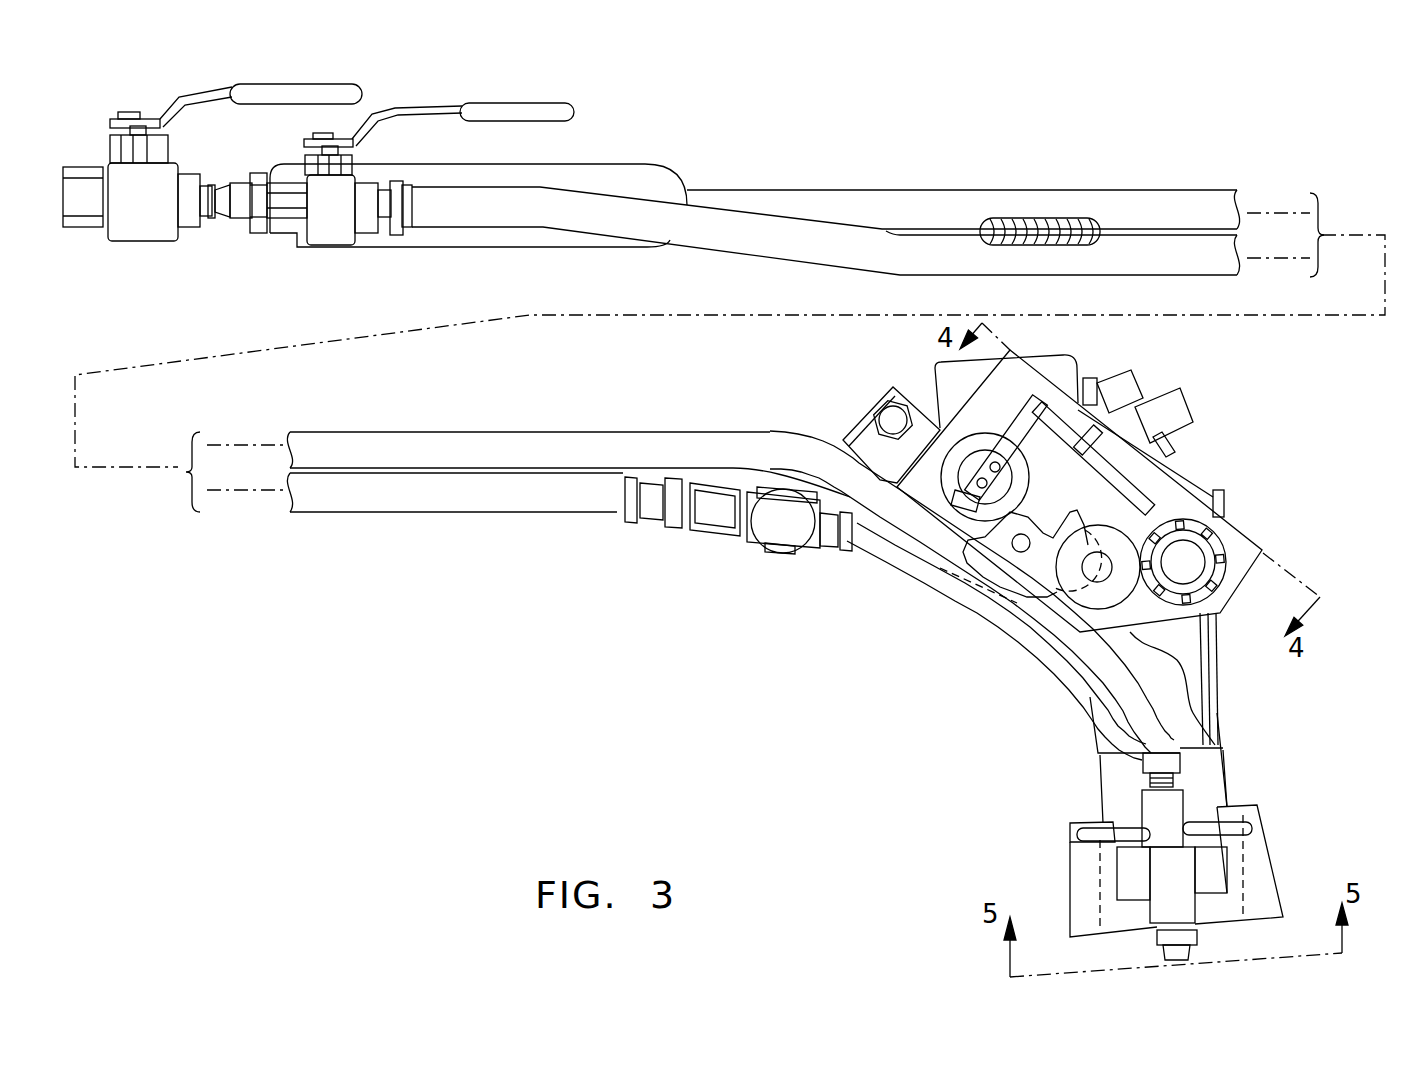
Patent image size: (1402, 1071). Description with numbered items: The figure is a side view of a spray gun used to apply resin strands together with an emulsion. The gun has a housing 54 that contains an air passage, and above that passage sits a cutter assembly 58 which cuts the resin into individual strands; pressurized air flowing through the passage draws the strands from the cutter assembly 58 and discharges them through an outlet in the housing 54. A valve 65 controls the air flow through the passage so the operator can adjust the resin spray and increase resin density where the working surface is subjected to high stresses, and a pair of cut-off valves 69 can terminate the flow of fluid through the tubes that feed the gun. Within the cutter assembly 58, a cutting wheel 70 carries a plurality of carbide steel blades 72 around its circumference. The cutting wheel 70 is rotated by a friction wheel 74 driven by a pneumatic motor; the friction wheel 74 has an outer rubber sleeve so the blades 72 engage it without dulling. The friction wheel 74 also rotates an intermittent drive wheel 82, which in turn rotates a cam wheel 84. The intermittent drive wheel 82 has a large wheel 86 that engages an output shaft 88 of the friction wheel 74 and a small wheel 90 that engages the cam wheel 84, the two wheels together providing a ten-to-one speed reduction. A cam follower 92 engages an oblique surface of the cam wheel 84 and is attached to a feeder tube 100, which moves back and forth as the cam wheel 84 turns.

The housing 54 is at (1190, 720).
The cutter assembly 58 is at (1263, 550).
The valve 65 is at (773, 527).
The cut-off valves 69 is at (318, 207).
The cutting wheel 70 is at (1233, 535).
The blades 72 is at (1193, 603).
The friction wheel 74 is at (1093, 590).
The intermittent drive wheel 82 is at (1033, 584).
The cam wheel 84 is at (970, 447).
The large wheel 86 is at (967, 597).
The output shaft 88 is at (1097, 572).
The small wheel 90 is at (1030, 527).
The cam follower 92 is at (1020, 427).
The feeder tube 100 is at (1123, 477).